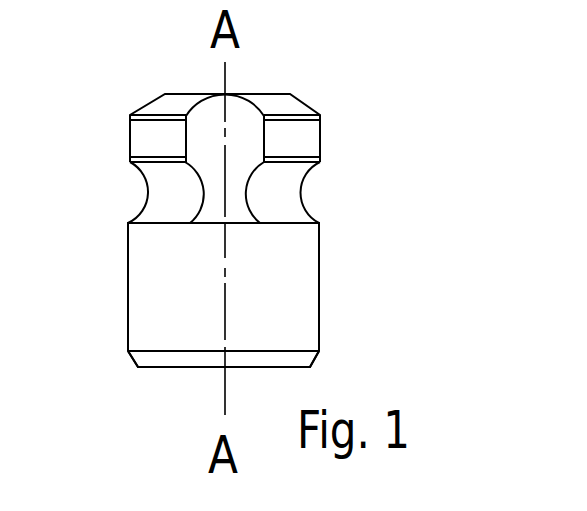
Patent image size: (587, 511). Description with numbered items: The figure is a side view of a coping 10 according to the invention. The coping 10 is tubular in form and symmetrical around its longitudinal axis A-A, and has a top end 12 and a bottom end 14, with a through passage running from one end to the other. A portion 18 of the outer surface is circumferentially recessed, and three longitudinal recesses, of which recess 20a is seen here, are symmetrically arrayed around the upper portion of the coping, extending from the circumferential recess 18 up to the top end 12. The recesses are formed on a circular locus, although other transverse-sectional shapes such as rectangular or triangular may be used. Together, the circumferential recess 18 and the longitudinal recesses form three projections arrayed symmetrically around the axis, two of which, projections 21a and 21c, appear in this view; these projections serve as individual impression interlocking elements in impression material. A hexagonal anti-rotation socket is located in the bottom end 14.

The coping 10 is at (254, 232).
The top end 12 is at (240, 101).
The bottom end 14 is at (165, 367).
The circumferential recess 18 is at (278, 198).
The longitudinal recess 20a is at (207, 122).
The projection 21a is at (145, 137).
The projection 21c is at (293, 136).